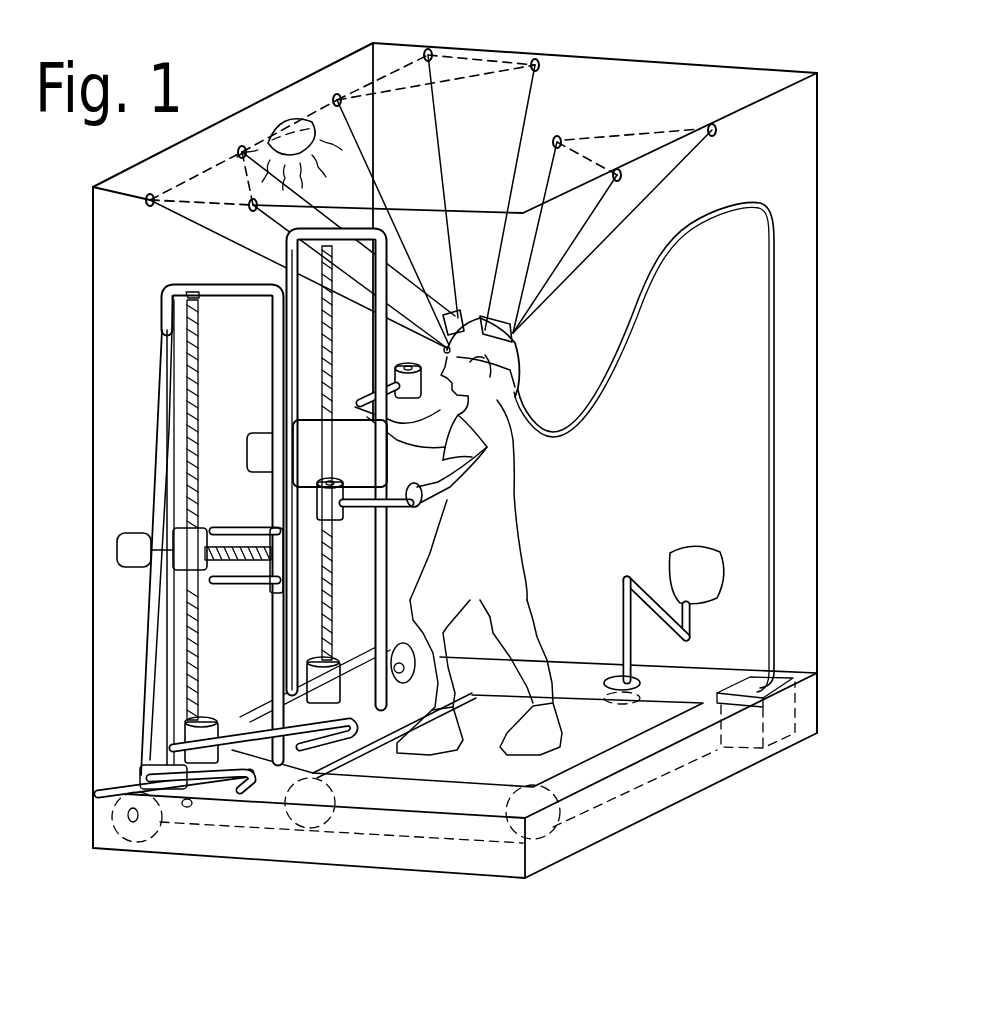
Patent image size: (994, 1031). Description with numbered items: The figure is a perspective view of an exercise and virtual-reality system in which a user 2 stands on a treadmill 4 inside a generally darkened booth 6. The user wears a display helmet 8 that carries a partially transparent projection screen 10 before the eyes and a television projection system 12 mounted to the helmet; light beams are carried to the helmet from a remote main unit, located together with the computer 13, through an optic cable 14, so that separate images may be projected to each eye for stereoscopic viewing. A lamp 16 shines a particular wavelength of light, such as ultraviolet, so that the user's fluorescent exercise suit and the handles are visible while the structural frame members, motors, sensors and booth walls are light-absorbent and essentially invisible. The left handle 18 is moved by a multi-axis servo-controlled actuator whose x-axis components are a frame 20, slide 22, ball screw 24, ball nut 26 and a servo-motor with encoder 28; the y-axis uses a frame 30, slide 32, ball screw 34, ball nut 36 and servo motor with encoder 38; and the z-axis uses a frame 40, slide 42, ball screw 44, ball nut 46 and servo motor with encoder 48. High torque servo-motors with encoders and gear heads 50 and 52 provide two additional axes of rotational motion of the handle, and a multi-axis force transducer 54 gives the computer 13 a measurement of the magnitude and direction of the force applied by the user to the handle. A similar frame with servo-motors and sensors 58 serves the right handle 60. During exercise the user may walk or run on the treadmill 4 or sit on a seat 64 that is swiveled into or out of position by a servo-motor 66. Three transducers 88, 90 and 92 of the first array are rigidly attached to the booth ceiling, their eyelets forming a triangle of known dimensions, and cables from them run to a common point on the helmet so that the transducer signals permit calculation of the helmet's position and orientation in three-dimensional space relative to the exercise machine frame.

The user 2 is at (490, 497).
The treadmill 4 is at (397, 767).
The booth 6 is at (478, 445).
The display helmet 8 is at (512, 330).
The partially transparent projection screen 10 is at (442, 357).
The television projection system 12 is at (522, 385).
The computer 13 is at (793, 704).
The optic cable 14 is at (780, 473).
The lamp 16 is at (300, 118).
The left handle 18 is at (421, 500).
The frame 20 is at (127, 775).
The slide 22 is at (258, 775).
The ball screw 24 is at (183, 820).
The ball nut 26 is at (147, 757).
The servo-motor with encoder 28 is at (115, 810).
The frame 30 is at (167, 670).
The slide 32 is at (167, 570).
The ball screw 34 is at (197, 632).
The ball nut 36 is at (177, 520).
The servo motor with encoder 38 is at (180, 705).
The frame 40 is at (187, 497).
The slide 42 is at (230, 513).
The ball screw 44 is at (203, 580).
The ball nut 46 is at (248, 545).
The servo motor with encoder 48 is at (117, 550).
The high torque servo-motor 50 is at (347, 513).
The high torque servo-motor 52 is at (352, 520).
The multi-axis force transducer 54 is at (400, 500).
The frame with servo-motors and sensors 58 is at (265, 695).
The right handle 60 is at (353, 406).
The seat 64 is at (672, 556).
The servo-motor 66 is at (612, 660).
The transducer 88 is at (560, 135).
The transducer 90 is at (718, 128).
The transducer 92 is at (622, 176).